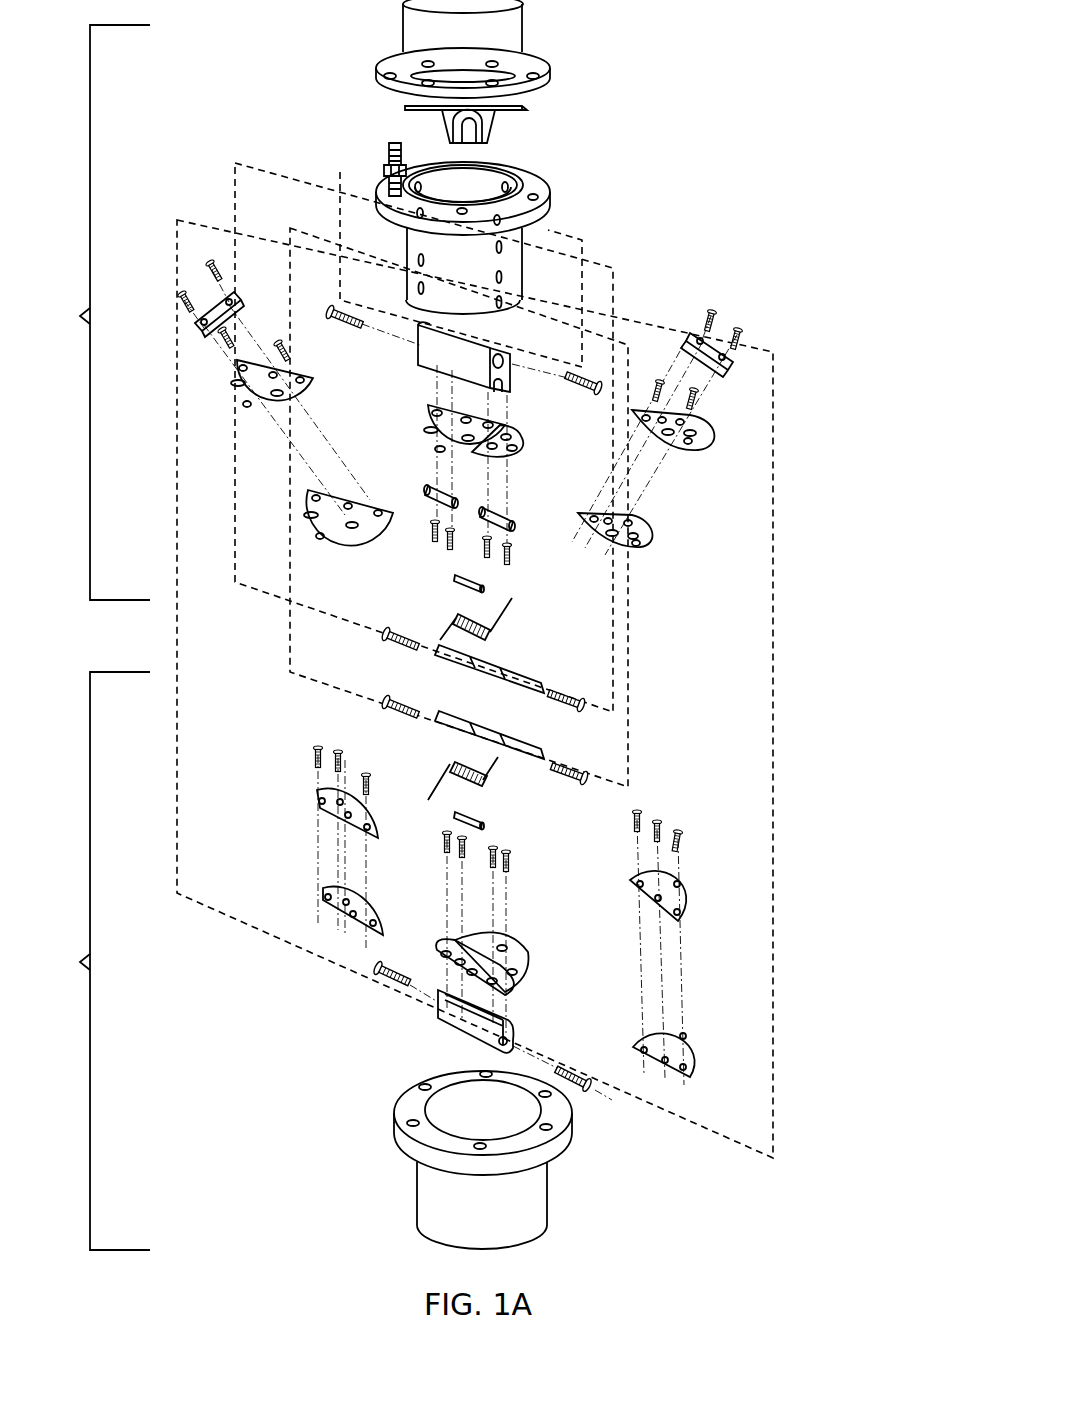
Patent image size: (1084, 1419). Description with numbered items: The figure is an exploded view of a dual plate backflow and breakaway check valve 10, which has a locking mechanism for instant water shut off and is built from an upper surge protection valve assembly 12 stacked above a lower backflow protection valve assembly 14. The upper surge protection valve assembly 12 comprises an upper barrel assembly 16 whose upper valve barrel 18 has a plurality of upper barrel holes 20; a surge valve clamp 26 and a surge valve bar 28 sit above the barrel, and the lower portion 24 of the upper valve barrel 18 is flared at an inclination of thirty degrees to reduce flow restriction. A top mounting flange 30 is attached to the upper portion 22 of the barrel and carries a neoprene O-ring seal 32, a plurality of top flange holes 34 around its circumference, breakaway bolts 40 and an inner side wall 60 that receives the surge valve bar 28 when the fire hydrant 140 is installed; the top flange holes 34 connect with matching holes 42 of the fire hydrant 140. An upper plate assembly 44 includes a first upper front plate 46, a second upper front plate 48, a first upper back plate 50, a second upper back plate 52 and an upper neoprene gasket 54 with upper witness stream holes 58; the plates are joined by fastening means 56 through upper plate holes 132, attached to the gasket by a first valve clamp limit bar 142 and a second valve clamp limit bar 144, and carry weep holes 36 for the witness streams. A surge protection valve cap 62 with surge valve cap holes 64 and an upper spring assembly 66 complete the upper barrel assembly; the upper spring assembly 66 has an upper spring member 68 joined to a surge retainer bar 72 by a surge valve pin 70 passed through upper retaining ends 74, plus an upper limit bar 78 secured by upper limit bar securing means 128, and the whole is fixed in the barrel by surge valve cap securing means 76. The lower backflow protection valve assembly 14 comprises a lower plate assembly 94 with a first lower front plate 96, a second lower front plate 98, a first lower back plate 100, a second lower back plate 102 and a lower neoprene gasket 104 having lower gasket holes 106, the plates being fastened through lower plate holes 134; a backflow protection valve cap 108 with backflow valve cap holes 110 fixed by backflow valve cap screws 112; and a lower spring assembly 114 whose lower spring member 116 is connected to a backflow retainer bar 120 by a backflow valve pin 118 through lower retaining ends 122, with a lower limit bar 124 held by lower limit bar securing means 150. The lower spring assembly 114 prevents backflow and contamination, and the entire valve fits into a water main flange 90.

The dual plate backflow and breakaway check valve 10 is at (690, 74).
The upper surge protection valve assembly 12 is at (100, 312).
The lower backflow protection valve assembly 14 is at (100, 961).
The upper barrel assembly 16 is at (507, 278).
The upper valve barrel 18 is at (507, 248).
The upper barrel holes 20 is at (512, 182).
The upper portion 22 is at (412, 258).
The lower portion 24 is at (416, 289).
The surge valve clamp 26 is at (495, 125).
The surge valve bar 28 is at (405, 107).
The top mounting flange 30 is at (556, 195).
The neoprene O-ring seal 32 is at (512, 162).
The top flange holes 34 is at (414, 210).
The weep holes 36 is at (345, 528).
The breakaway bolts 40 is at (385, 167).
The matching holes 42 is at (386, 78).
The upper plate assembly 44 is at (193, 243).
The first upper front plate 46 is at (238, 392).
The second upper front plate 48 is at (702, 434).
The first upper back plate 50 is at (322, 532).
The second upper back plate 52 is at (648, 545).
The upper neoprene gasket 54 is at (512, 442).
The fastening means 56 is at (203, 328).
The upper witness stream holes 58 is at (447, 440).
The inner side wall 60 is at (442, 176).
The surge protection valve cap 62 is at (432, 346).
The surge valve cap holes 64 is at (503, 358).
The upper spring assembly 66 is at (608, 613).
The upper spring member 68 is at (463, 620).
The surge valve pin 70 is at (480, 586).
The surge retainer bar 72 is at (440, 494).
The upper retaining ends 74 is at (500, 524).
The surge valve cap securing means 76 is at (334, 310).
The upper limit bar 78 is at (503, 672).
The water main flange 90 is at (468, 1095).
The lower plate assembly 94 is at (285, 748).
The first lower front plate 96 is at (325, 796).
The second lower front plate 98 is at (687, 894).
The first lower back plate 100 is at (328, 890).
The second lower back plate 102 is at (692, 1042).
The lower neoprene gasket 104 is at (520, 946).
The lower gasket holes 106 is at (515, 976).
The backflow protection valve cap 108 is at (437, 1006).
The backflow valve cap holes 110 is at (508, 1040).
The backflow valve cap screws 112 is at (372, 966).
The lower spring assembly 114 is at (568, 797).
The lower spring member 116 is at (458, 768).
The backflow valve pin 118 is at (477, 820).
The backflow retainer bar 120 is at (449, 876).
The lower retaining ends 122 is at (508, 890).
The lower limit bar 124 is at (453, 722).
The upper limit bar securing means 128 is at (392, 630).
The upper plate holes 132 is at (250, 402).
The lower plate holes 134 is at (332, 806).
The fire hydrant 140 is at (522, 45).
The first valve clamp limit bar 142 is at (508, 302).
The second valve clamp limit bar 144 is at (718, 345).
The lower limit bar securing means 150 is at (578, 770).